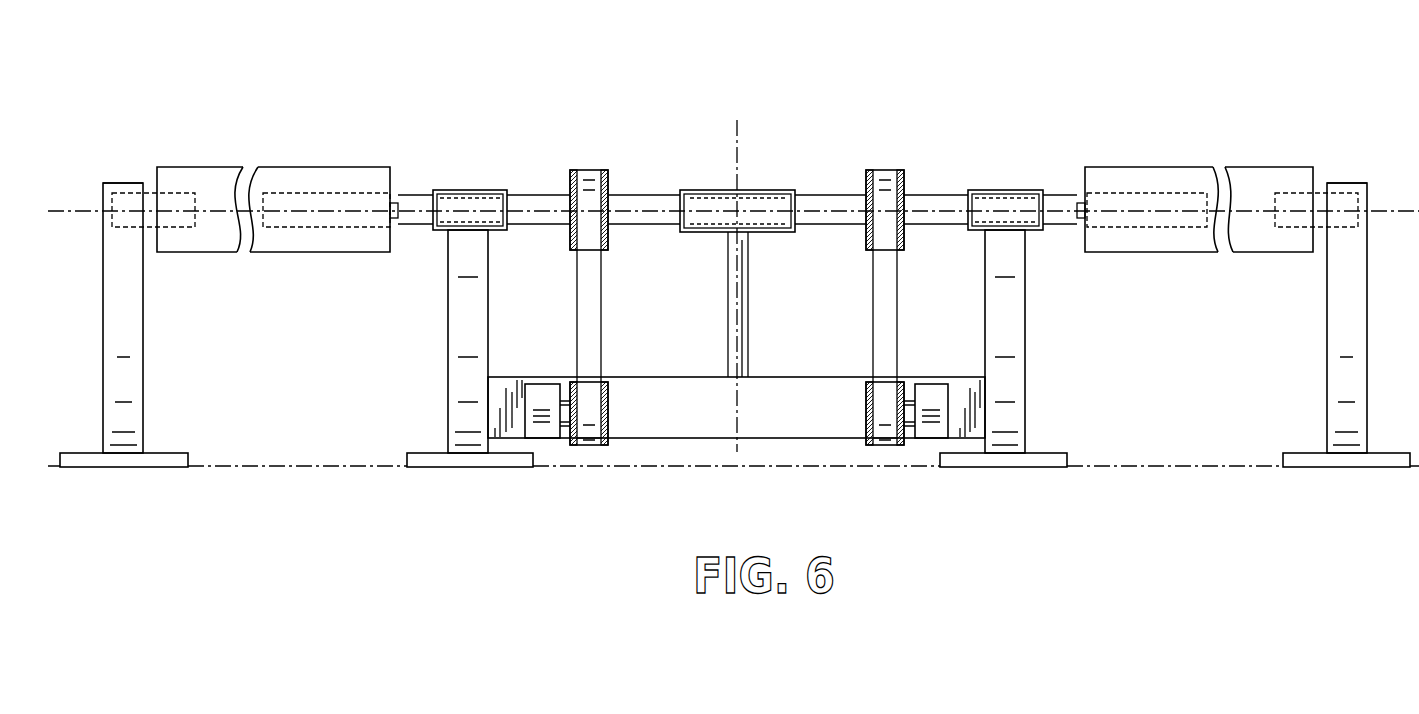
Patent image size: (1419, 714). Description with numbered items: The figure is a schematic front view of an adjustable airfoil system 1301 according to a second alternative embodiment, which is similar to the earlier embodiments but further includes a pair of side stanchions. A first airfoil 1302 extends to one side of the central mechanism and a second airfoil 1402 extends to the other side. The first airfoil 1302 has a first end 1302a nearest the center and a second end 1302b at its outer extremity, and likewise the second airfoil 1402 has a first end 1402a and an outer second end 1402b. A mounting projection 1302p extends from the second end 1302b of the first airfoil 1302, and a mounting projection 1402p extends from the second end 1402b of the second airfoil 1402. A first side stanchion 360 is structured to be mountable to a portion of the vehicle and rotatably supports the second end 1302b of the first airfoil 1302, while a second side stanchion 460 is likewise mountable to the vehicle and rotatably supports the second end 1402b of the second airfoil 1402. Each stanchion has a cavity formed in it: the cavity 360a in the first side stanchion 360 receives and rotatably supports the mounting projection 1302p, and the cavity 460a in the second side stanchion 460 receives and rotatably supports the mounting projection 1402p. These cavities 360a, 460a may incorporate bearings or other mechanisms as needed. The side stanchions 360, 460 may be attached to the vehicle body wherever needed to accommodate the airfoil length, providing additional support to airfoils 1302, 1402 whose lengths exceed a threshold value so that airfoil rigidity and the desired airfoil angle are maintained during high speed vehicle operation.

The second side stanchion 460 is at (130, 335).
The cavity 460a is at (122, 180).
The second airfoil 1402 is at (317, 167).
The first end of second airfoil 1402a is at (367, 177).
The second end of second airfoil 1402b is at (172, 247).
The mounting projection 1402p is at (150, 200).
The adjustable airfoil system 1301 is at (1190, 152).
The first airfoil 1302 is at (1117, 167).
The first end of first airfoil 1302a is at (1098, 178).
The second end of first airfoil 1302b is at (1293, 178).
The mounting projection 1302p is at (1325, 197).
The first side stanchion 360 is at (1343, 308).
The cavity 360a is at (1352, 180).